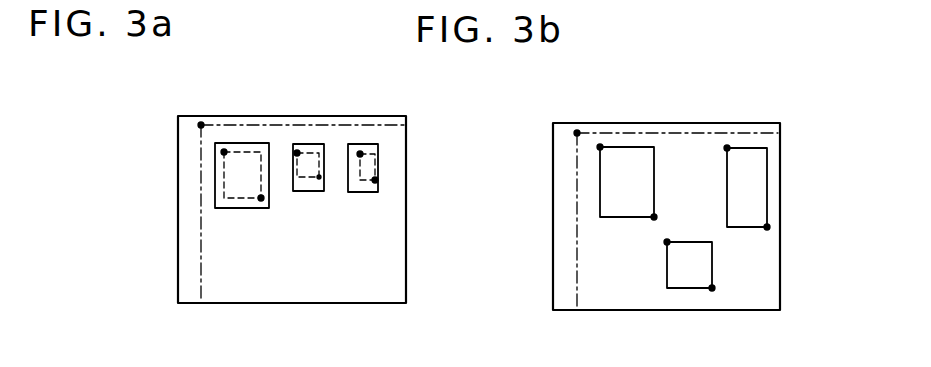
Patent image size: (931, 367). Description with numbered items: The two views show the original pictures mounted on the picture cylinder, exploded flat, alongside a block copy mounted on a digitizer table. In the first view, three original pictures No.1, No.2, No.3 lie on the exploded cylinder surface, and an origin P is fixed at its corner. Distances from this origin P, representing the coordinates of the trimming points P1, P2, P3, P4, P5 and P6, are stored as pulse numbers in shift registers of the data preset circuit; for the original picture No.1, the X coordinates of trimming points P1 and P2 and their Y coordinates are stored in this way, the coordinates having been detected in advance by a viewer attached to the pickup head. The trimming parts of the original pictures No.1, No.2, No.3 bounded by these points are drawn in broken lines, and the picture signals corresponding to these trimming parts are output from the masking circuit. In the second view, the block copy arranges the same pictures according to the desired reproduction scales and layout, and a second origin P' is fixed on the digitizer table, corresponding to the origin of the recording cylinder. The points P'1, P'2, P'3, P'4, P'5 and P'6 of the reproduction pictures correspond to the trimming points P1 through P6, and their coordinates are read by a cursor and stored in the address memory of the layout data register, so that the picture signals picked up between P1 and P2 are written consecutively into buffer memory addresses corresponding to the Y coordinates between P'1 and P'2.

In FIG. 3a, the origin P is at (275, 188).
In FIG. 3a, the trimming point P1 is at (224, 152).
In FIG. 3a, the trimming point P2 is at (261, 198).
In FIG. 3a, the trimming point P3 is at (297, 153).
In FIG. 3a, the trimming point P4 is at (319, 177).
In FIG. 3a, the trimming point P5 is at (360, 154).
In FIG. 3a, the trimming point P6 is at (375, 180).
In FIG. 3a, the original picture No.1 is at (230, 208).
In FIG. 3a, the original picture No.2 is at (313, 191).
In FIG. 3a, the original picture No.3 is at (368, 192).
In FIG. 3b, the origin P' is at (664, 186).
In FIG. 3b, the point of reproduction picture P'1 is at (637, 154).
In FIG. 3b, the point of reproduction picture P'2 is at (673, 196).
In FIG. 3b, the point of reproduction picture P'3 is at (669, 258).
In FIG. 3b, the point of reproduction picture P'4 is at (734, 293).
In FIG. 3b, the point of reproduction picture P'5 is at (742, 159).
In FIG. 3b, the point of reproduction picture P'6 is at (751, 248).